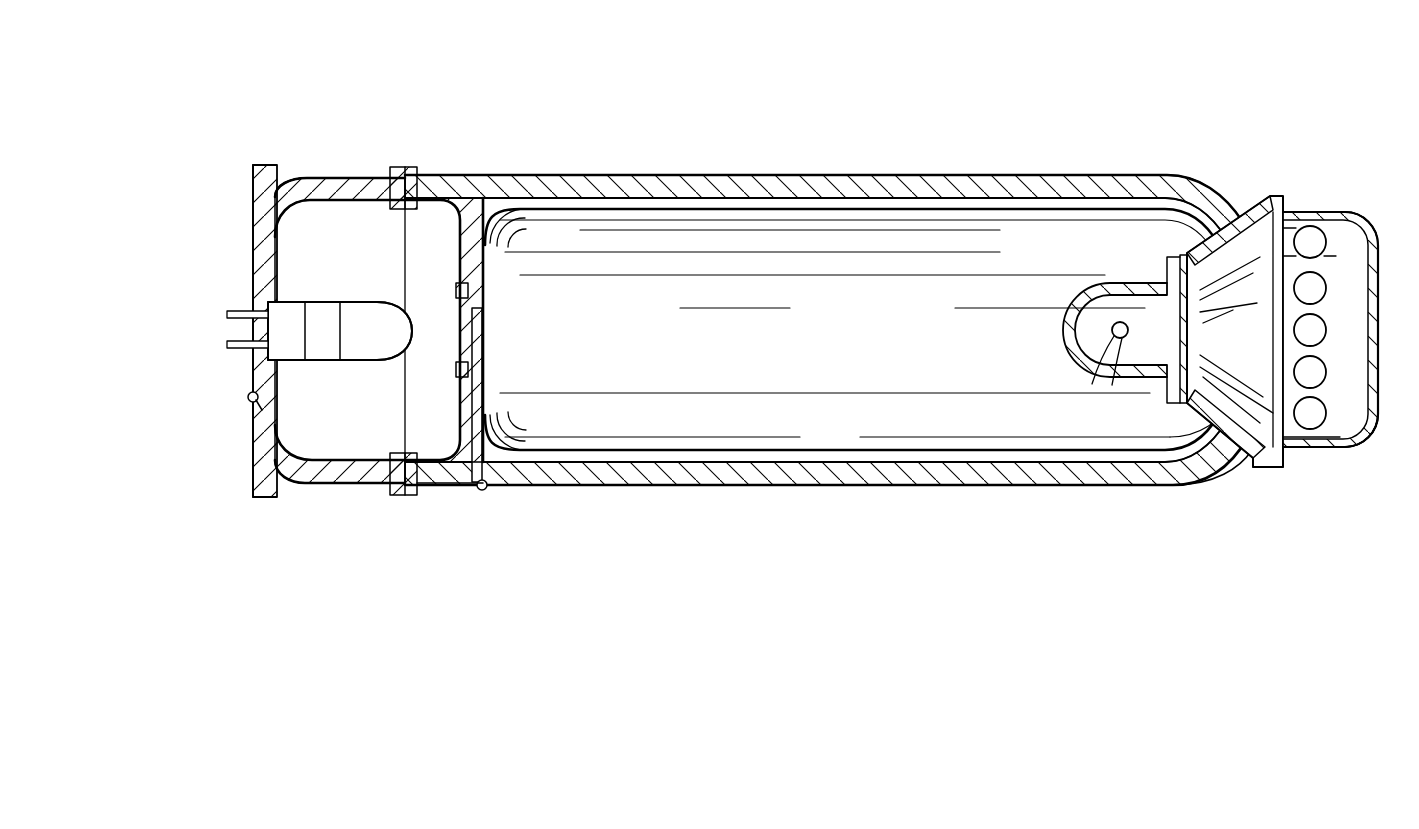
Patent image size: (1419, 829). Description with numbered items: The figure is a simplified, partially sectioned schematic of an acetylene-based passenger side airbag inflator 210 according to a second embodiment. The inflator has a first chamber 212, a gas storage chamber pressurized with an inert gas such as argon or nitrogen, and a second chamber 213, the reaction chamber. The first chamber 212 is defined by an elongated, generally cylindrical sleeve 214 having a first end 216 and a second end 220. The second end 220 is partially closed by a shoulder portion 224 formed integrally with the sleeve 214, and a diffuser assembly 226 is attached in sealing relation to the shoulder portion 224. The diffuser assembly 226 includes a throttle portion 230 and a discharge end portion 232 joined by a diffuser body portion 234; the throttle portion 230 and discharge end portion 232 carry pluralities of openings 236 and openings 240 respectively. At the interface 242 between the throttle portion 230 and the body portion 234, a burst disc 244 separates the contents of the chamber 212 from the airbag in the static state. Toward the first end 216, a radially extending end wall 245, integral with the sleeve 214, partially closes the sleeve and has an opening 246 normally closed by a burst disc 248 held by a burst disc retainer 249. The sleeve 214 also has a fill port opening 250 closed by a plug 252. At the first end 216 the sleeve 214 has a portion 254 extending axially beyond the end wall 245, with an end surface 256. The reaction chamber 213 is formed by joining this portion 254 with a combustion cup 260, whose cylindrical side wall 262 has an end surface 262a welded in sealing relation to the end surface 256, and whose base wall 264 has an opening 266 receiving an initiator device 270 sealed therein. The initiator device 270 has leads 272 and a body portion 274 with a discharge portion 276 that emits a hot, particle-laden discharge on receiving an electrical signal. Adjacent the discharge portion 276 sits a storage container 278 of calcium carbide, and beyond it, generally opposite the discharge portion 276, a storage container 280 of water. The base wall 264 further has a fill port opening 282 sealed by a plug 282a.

The passenger side airbag inflator 210 is at (745, 115).
The first chamber 212 is at (815, 206).
The second chamber 213 is at (276, 196).
The sleeve 214 is at (923, 183).
The first end 216 is at (450, 153).
The second end 220 is at (1222, 165).
The shoulder portion 224 is at (1208, 474).
The diffuser assembly 226 is at (1283, 172).
The throttle portion 230 is at (1087, 301).
The discharge end portion 232 is at (1370, 438).
The diffuser body portion 234 is at (1248, 457).
The openings 236 is at (1092, 384).
The openings 240 is at (1345, 220).
The interface 242 is at (1173, 257).
The burst disc 244 is at (1188, 330).
The end wall 245 is at (479, 258).
The opening 246 is at (479, 342).
The burst disc 248 is at (456, 364).
The burst disc retainer 249 is at (455, 292).
The opening 250 is at (505, 442).
The plug 252 is at (486, 489).
The portion 254 is at (430, 484).
The end surface 256 is at (410, 495).
The combustion cup 260 is at (235, 185).
The side wall 262 is at (343, 182).
The end surface 262a is at (415, 166).
The base wall 264 is at (267, 496).
The opening 266 is at (250, 373).
The initiator device 270 is at (270, 311).
The leads 272 is at (227, 344).
The body portion 274 is at (293, 297).
The discharge portion 276 is at (318, 361).
The storage container 278 is at (328, 298).
The storage container 280 is at (367, 363).
The opening 282 is at (253, 406).
The plug 282a is at (248, 397).